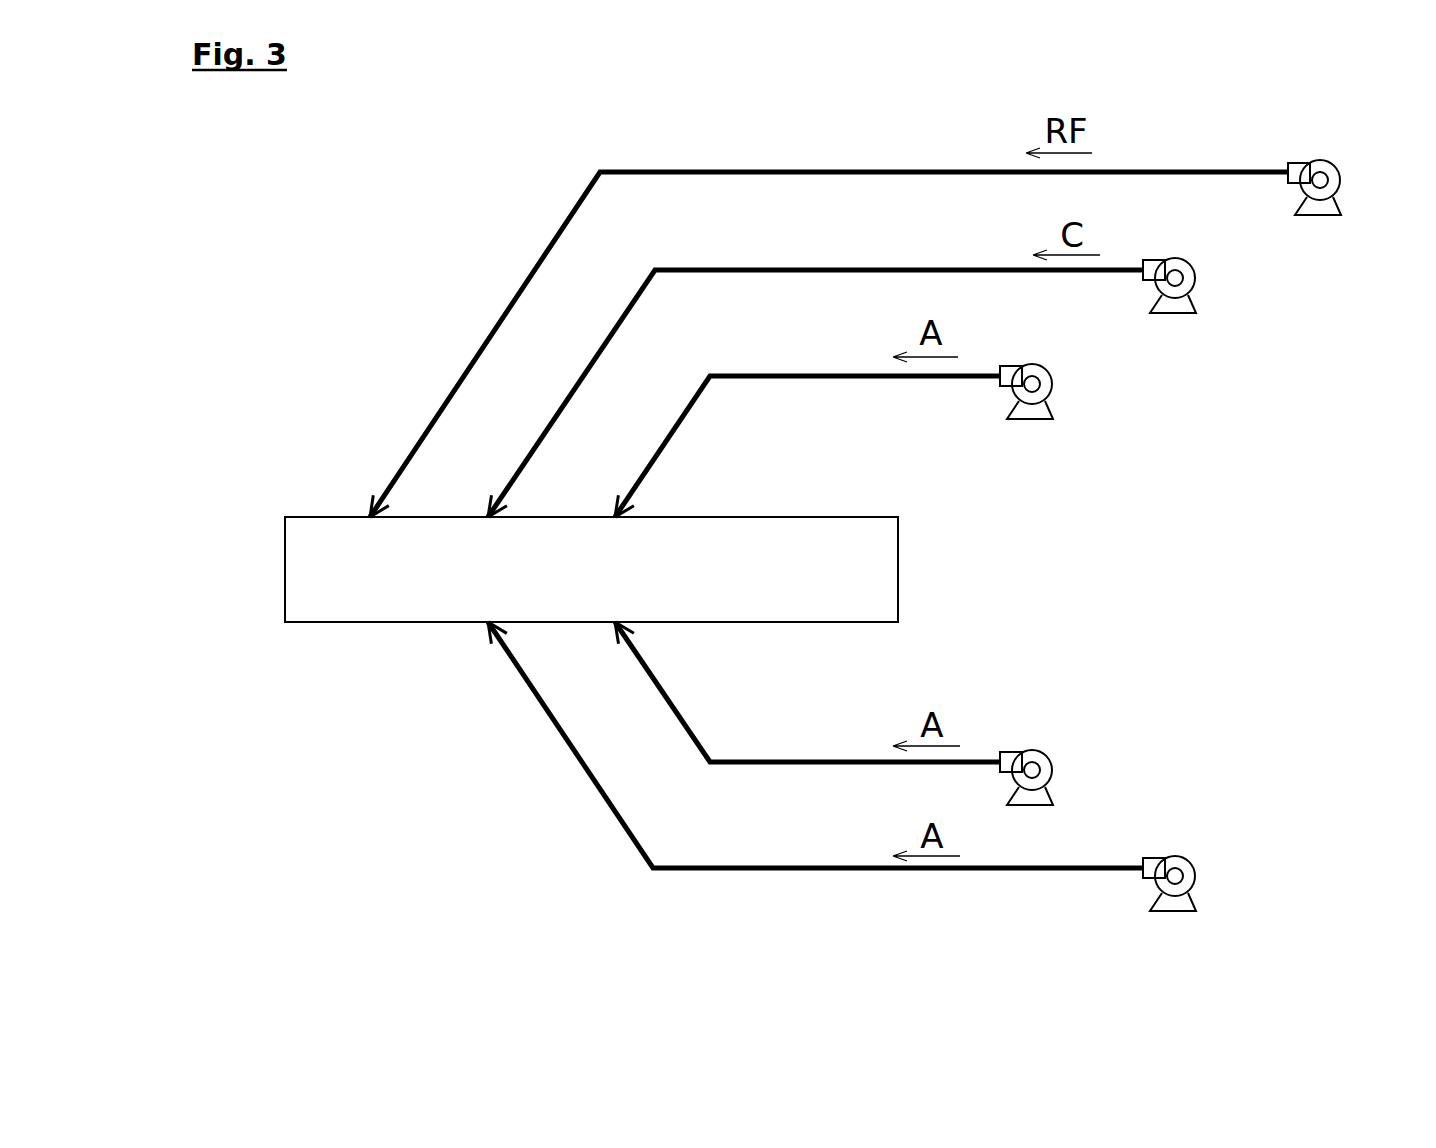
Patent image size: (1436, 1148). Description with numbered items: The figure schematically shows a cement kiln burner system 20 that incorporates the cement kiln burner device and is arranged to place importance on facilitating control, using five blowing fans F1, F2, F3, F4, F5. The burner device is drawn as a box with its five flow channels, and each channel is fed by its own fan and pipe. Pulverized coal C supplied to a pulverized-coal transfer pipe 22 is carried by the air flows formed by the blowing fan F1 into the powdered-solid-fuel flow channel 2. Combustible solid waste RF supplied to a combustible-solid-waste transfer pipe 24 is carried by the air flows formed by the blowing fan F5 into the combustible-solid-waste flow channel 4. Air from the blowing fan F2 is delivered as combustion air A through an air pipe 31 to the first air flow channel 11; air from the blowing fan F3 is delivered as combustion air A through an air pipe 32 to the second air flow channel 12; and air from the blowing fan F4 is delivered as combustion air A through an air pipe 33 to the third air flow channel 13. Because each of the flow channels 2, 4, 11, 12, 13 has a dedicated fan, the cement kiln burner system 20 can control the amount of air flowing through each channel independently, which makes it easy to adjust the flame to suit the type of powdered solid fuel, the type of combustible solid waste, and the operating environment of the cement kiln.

The cement kiln burner system 20 is at (251, 201).
The combustible-solid-waste transfer pipe 24 is at (862, 170).
The pulverized-coal transfer pipe 22 is at (928, 270).
The air pipe 31 is at (940, 378).
The air pipe 32 is at (765, 760).
The air pipe 33 is at (787, 870).
The combustible-solid-waste flow channel 4 is at (370, 540).
The powdered-solid-fuel flow channel 2 is at (490, 540).
The first air flow channel 11 is at (615, 540).
The second air flow channel 12 is at (615, 602).
The third air flow channel 13 is at (490, 602).
The blowing fan F1 is at (1182, 305).
The blowing fan F2 is at (1033, 418).
The blowing fan F3 is at (1040, 795).
The blowing fan F4 is at (1183, 900).
The blowing fan F5 is at (1320, 207).